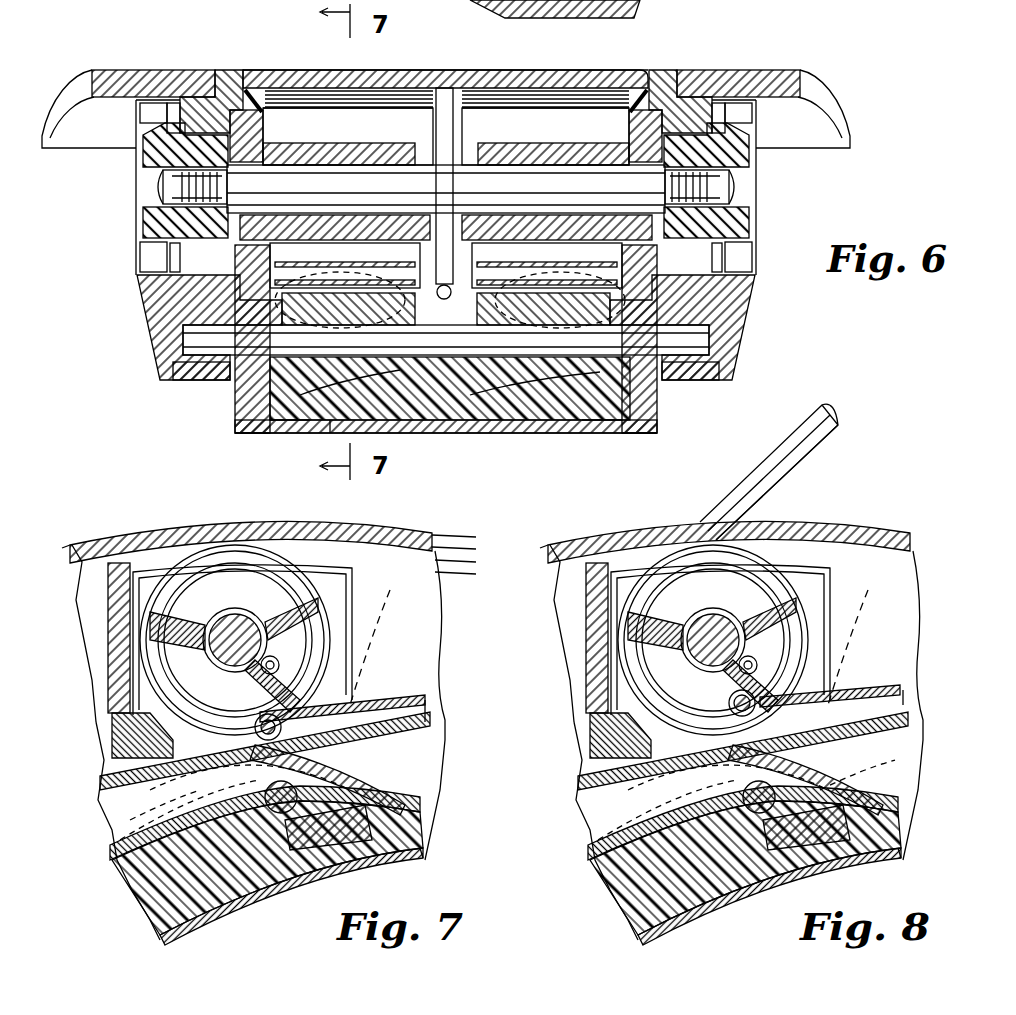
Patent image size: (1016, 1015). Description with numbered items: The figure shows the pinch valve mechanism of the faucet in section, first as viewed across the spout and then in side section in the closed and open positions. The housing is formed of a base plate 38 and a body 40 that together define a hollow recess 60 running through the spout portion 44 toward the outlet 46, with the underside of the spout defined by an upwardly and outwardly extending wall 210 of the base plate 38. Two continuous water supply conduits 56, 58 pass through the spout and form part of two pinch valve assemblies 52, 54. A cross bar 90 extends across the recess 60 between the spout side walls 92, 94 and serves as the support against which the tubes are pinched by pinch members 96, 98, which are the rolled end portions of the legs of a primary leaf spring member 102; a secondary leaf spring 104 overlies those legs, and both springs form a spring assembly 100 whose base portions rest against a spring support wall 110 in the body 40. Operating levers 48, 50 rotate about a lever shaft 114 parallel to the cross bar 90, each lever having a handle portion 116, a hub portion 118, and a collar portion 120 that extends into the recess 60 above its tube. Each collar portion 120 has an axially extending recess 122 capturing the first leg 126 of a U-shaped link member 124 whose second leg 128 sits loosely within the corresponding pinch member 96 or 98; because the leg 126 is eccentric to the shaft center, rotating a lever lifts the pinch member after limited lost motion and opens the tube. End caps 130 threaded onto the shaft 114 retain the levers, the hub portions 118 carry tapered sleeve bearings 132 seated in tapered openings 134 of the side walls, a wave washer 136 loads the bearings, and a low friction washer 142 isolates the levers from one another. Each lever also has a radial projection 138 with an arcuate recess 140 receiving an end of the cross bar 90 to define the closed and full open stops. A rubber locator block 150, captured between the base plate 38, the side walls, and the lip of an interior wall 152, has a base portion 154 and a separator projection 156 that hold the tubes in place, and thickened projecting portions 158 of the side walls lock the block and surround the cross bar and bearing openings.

In FIG. 6, the base plate 38 is at (562, 446).
In FIG. 7, the base plate 38 is at (229, 917).
In FIG. 8, the base plate 38 is at (735, 918).
In FIG. 6, the body 40 is at (435, 60).
In FIG. 7, the body 40 is at (103, 534).
In FIG. 8, the body 40 is at (596, 533).
In FIG. 6, the spout portion 44 is at (536, 66).
In FIG. 7, the spout portion 44 is at (385, 524).
In FIG. 8, the spout portion 44 is at (885, 526).
In FIG. 6, the outlet 46 is at (604, 6).
In FIG. 6, the operating lever 48 is at (775, 64).
In FIG. 6, the operating lever 50 is at (117, 62).
In FIG. 7, the operating lever 50 is at (467, 527).
In FIG. 8, the operating lever 50 is at (822, 458).
In FIG. 6, the pinch valve assembly 52 is at (508, 115).
In FIG. 6, the pinch valve assembly 54 is at (368, 115).
In FIG. 6, the water supply conduit 56 is at (648, 388).
In FIG. 6, the water supply conduit 58 is at (251, 385).
In FIG. 7, the water supply conduit 58 is at (103, 778).
In FIG. 8, the water supply conduit 58 is at (581, 780).
In FIG. 6, the recess 60 is at (325, 92).
In FIG. 7, the recess 60 is at (103, 570).
In FIG. 8, the recess 60 is at (581, 570).
In FIG. 6, the cross bar 90 is at (451, 372).
In FIG. 7, the cross bar 90 is at (308, 865).
In FIG. 8, the cross bar 90 is at (786, 862).
In FIG. 6, the spout side wall 92 is at (658, 428).
In FIG. 6, the spout side wall 94 is at (241, 428).
In FIG. 7, the spout side wall 94 is at (415, 615).
In FIG. 8, the spout side wall 94 is at (888, 600).
In FIG. 6, the pinch member 96 is at (702, 305).
In FIG. 6, the pinch member 98 is at (270, 268).
In FIG. 7, the pinch member 98 is at (318, 745).
In FIG. 8, the pinch member 98 is at (783, 750).
In FIG. 7, the spring assembly 100 is at (433, 700).
In FIG. 8, the spring assembly 100 is at (896, 690).
In FIG. 6, the primary leaf spring member 102 is at (348, 295).
In FIG. 7, the primary leaf spring member 102 is at (433, 712).
In FIG. 8, the primary leaf spring member 102 is at (896, 712).
In FIG. 7, the secondary leaf spring 104 is at (415, 680).
In FIG. 8, the secondary leaf spring 104 is at (885, 682).
In FIG. 6, the spring support wall 110 is at (473, 115).
In FIG. 6, the lever shaft 114 is at (423, 165).
In FIG. 7, the lever shaft 114 is at (283, 610).
In FIG. 8, the lever shaft 114 is at (753, 610).
In FIG. 6, the handle portion 116 is at (76, 142).
In FIG. 7, the handle portion 116 is at (465, 536).
In FIG. 8, the handle portion 116 is at (837, 412).
In FIG. 6, the hub portion 118 is at (252, 108).
In FIG. 7, the hub portion 118 is at (203, 585).
In FIG. 8, the hub portion 118 is at (681, 585).
In FIG. 6, the collar portion 120 is at (338, 146).
In FIG. 7, the collar portion 120 is at (235, 600).
In FIG. 8, the collar portion 120 is at (713, 600).
In FIG. 7, the recess 122 is at (283, 660).
In FIG. 8, the recess 122 is at (761, 660).
In FIG. 6, the link member 124 is at (393, 235).
In FIG. 6, the first leg 126 is at (339, 200).
In FIG. 7, the first leg 126 is at (286, 667).
In FIG. 8, the first leg 126 is at (763, 666).
In FIG. 6, the second leg 128 is at (423, 355).
In FIG. 7, the second leg 128 is at (248, 760).
In FIG. 8, the second leg 128 is at (731, 752).
In FIG. 6, the end cap 130 is at (151, 222).
In FIG. 6, the tapered sleeve bearing 132 is at (226, 80).
In FIG. 7, the tapered sleeve bearing 132 is at (308, 600).
In FIG. 8, the tapered sleeve bearing 132 is at (798, 600).
In FIG. 6, the tapered opening 134 is at (287, 96).
In FIG. 7, the tapered opening 134 is at (178, 575).
In FIG. 8, the tapered opening 134 is at (658, 578).
In FIG. 6, the wave washer 136 is at (174, 102).
In FIG. 6, the radial projection 138 is at (172, 352).
In FIG. 7, the radial projection 138 is at (113, 842).
In FIG. 8, the radial projection 138 is at (898, 798).
In FIG. 6, the arcuate recess 140 is at (201, 370).
In FIG. 7, the arcuate recess 140 is at (103, 814).
In FIG. 8, the arcuate recess 140 is at (898, 768).
In FIG. 6, the washer 142 is at (719, 102).
In FIG. 6, the locator block 150 is at (341, 440).
In FIG. 7, the locator block 150 is at (165, 905).
In FIG. 8, the locator block 150 is at (640, 903).
In FIG. 7, the interior wall 152 is at (108, 610).
In FIG. 8, the interior wall 152 is at (591, 600).
In FIG. 6, the base portion 154 is at (503, 402).
In FIG. 7, the base portion 154 is at (375, 822).
In FIG. 8, the base portion 154 is at (853, 826).
In FIG. 6, the separator projection 156 is at (460, 390).
In FIG. 6, the projecting portion 158 is at (303, 432).
In FIG. 7, the projecting portion 158 is at (358, 592).
In FIG. 8, the projecting portion 158 is at (825, 592).
In FIG. 6, the wall 210 is at (273, 433).
In FIG. 7, the wall 210 is at (426, 850).
In FIG. 8, the wall 210 is at (898, 852).